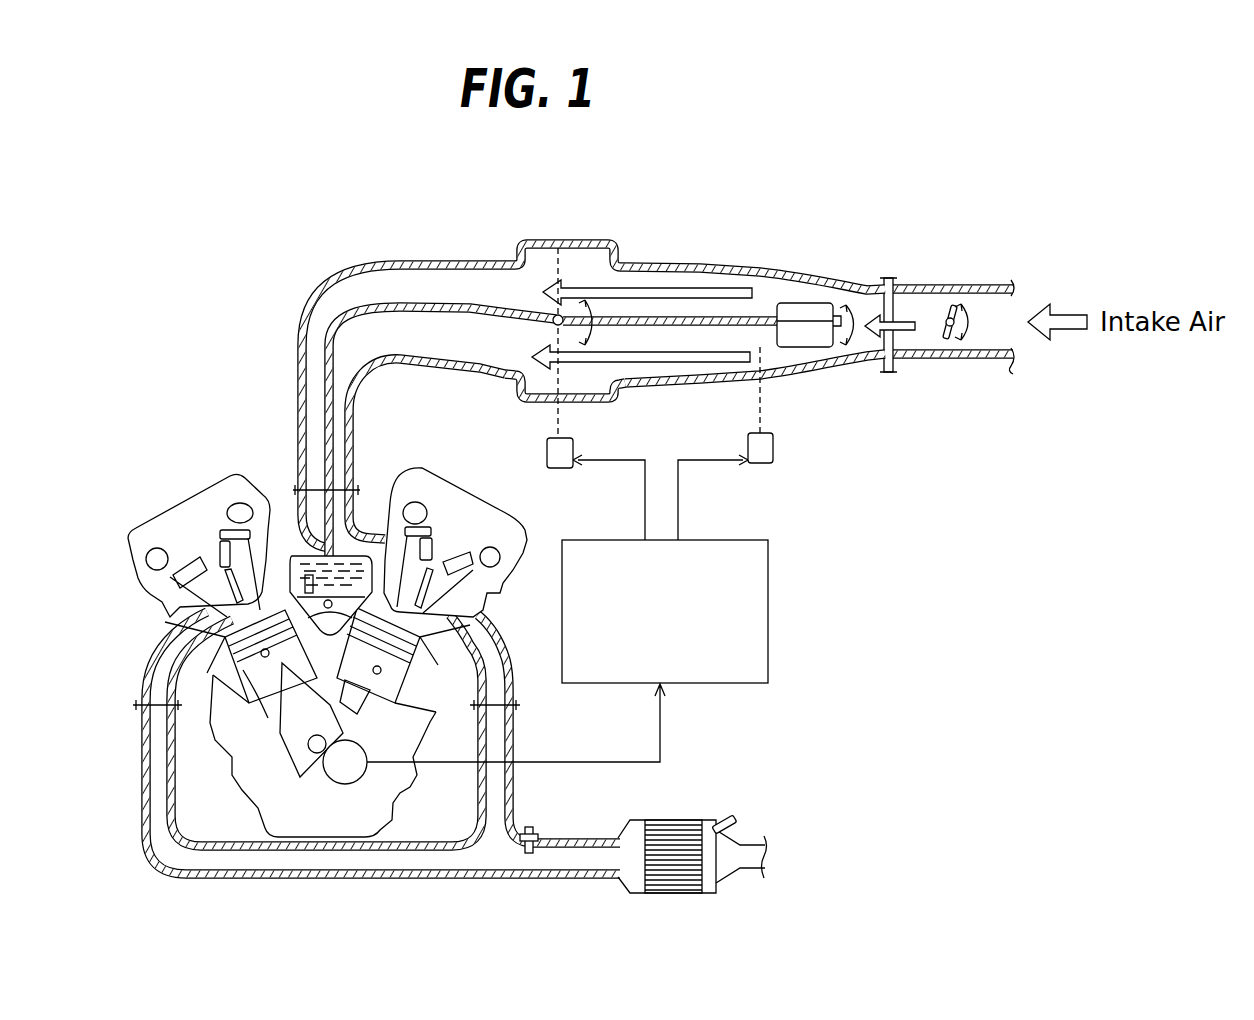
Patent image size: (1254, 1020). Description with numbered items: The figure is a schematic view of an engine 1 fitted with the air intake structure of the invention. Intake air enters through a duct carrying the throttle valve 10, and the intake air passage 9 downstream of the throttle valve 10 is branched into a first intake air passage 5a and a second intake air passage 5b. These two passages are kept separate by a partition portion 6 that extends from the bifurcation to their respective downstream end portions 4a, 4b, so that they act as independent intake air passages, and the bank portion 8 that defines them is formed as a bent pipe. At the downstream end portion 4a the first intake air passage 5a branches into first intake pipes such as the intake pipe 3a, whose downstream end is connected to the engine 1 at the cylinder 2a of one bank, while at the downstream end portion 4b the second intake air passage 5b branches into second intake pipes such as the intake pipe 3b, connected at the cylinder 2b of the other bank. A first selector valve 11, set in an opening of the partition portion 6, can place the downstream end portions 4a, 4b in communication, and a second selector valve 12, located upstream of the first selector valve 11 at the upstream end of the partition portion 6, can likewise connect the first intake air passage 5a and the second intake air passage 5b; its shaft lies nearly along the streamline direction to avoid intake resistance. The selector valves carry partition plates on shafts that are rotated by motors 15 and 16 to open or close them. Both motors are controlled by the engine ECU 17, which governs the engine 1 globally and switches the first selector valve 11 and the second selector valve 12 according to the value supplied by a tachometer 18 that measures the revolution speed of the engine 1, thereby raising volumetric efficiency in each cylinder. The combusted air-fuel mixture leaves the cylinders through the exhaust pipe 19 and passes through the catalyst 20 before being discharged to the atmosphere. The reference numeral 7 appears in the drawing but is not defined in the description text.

The engine 1 is at (182, 480).
The cylinder 2a is at (230, 697).
The cylinder 2b is at (412, 703).
The intake pipe 3a is at (318, 413).
The intake pipe 3b is at (352, 414).
The downstream end portion of the first intake air passage 4a is at (556, 260).
The downstream end portion of the second intake air passage 4b is at (590, 384).
The first intake air passage 5a is at (720, 298).
The second intake air passage 5b is at (706, 368).
The partition portion 6 is at (655, 316).
The intake duct 7 is at (888, 366).
The bank portion 8 is at (700, 264).
The intake air passage 9 is at (898, 314).
The throttle valve 10 is at (952, 304).
The first selector valve 11 is at (562, 312).
The second selector valve 12 is at (815, 349).
The motor 15 is at (547, 452).
The motor 16 is at (773, 450).
The engine ECU 17 is at (768, 556).
The tachometer 18 is at (385, 780).
The exhaust pipe 19 is at (141, 741).
The catalyst 20 is at (672, 820).